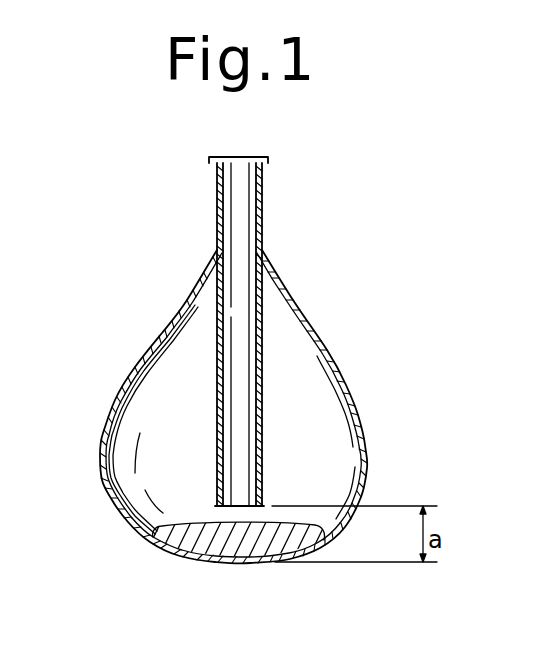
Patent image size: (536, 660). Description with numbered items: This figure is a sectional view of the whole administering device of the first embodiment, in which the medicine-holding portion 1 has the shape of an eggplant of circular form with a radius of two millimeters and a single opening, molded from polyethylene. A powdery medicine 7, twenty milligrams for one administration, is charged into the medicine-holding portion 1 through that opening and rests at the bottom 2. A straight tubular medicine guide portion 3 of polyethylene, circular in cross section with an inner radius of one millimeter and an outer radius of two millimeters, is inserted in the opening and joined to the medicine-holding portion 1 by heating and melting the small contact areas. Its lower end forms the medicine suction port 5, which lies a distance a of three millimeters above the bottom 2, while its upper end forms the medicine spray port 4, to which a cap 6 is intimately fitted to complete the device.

The medicine-holding portion 1 is at (350, 385).
The bottom 2 is at (208, 561).
The medicine guide portion 3 is at (264, 298).
The medicine spray port 4 is at (243, 170).
The medicine suction port 5 is at (240, 468).
The cap 6 is at (270, 159).
The powdery medicine 7 is at (245, 561).